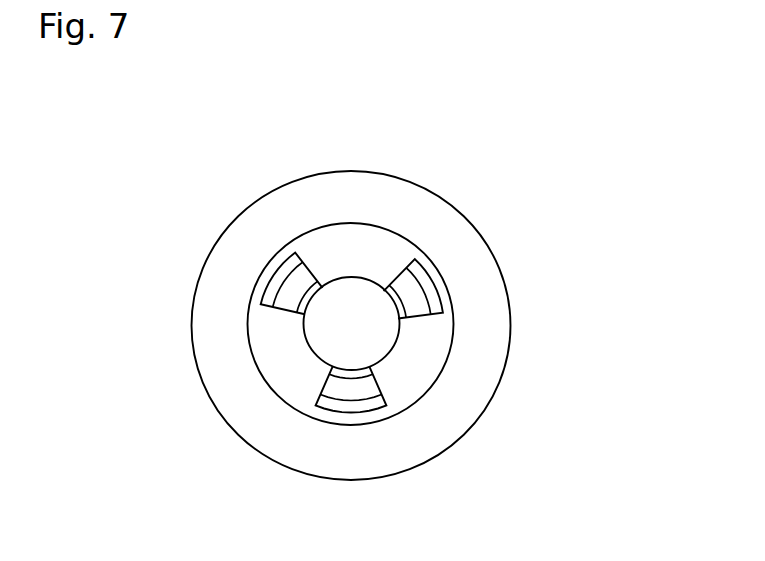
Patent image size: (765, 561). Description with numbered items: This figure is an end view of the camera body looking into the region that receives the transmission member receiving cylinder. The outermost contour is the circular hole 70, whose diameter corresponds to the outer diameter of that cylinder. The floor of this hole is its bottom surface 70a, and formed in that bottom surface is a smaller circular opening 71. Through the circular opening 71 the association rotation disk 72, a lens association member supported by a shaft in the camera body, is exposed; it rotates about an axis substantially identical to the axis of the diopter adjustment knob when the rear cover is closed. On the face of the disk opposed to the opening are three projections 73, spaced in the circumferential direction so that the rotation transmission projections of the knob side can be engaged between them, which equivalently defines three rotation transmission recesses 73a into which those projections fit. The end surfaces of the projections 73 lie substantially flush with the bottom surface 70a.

The circular hole 70 is at (434, 199).
The bottom surface 70a is at (495, 313).
The circular opening 71 is at (451, 329).
The association rotation disk 72 is at (240, 328).
The projections 73 is at (285, 287).
The rotation transmission recesses 73a is at (398, 270).